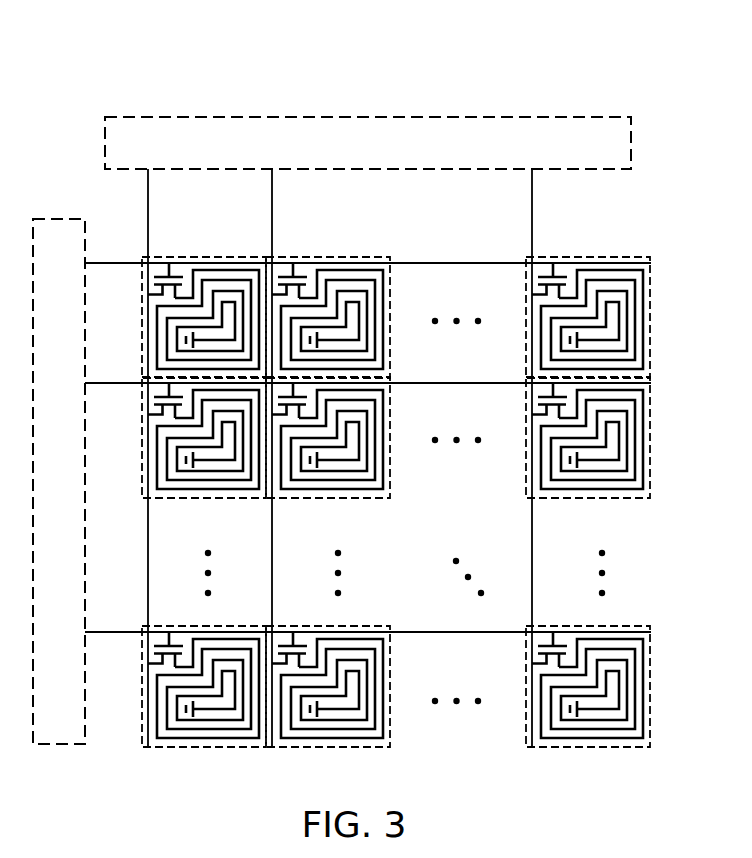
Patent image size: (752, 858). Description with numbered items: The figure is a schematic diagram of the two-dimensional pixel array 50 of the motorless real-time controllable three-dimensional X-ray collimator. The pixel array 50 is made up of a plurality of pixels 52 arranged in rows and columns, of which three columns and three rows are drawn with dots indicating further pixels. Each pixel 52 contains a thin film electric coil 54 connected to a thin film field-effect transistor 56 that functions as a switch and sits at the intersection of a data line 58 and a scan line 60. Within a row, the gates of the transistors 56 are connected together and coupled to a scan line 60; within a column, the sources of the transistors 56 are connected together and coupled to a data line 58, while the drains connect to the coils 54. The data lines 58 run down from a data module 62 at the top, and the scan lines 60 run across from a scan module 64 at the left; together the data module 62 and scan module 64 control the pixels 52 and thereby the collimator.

The 2D pixel array 50 is at (590, 91).
The pixel 52 is at (623, 318).
The thin film electric coil 54 is at (332, 296).
The thin film field-effect transistor 56 is at (172, 259).
The data line 58 is at (533, 217).
The scan line 60 is at (112, 263).
The data module 62 is at (632, 141).
The scan module 64 is at (58, 218).